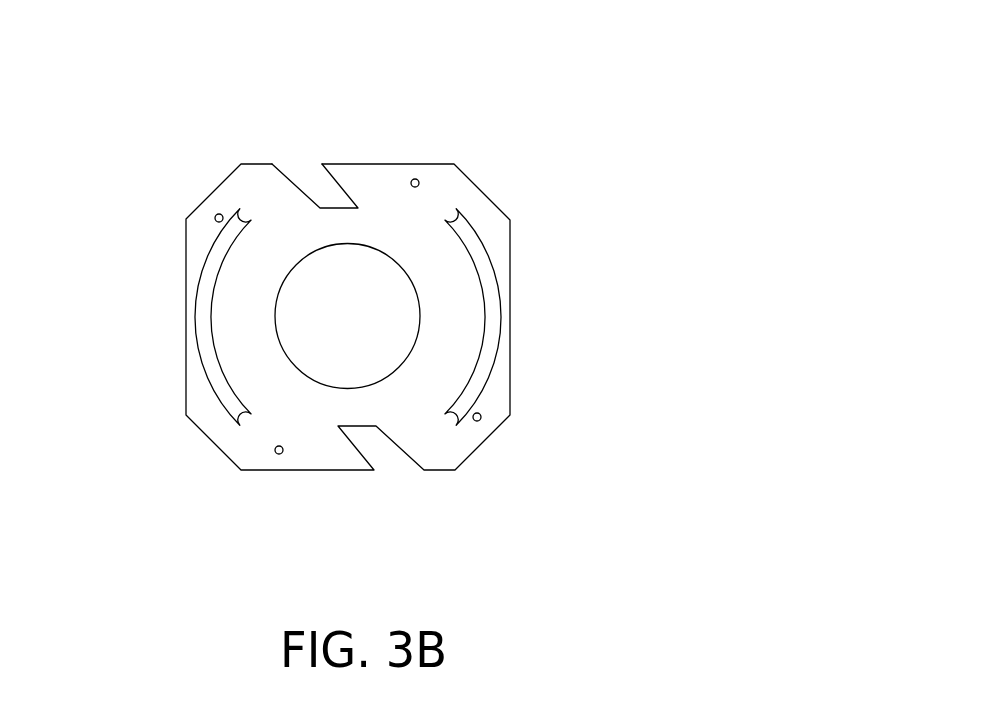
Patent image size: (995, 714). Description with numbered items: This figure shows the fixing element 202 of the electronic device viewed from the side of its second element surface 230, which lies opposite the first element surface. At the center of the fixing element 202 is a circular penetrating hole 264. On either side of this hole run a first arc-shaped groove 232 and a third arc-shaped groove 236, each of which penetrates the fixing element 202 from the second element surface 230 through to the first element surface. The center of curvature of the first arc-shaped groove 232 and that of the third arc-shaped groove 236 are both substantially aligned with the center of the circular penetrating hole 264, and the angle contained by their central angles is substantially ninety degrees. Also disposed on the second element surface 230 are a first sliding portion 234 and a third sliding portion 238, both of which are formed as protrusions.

The fixing element 202 is at (752, 42).
The second element surface 230 is at (356, 164).
The first arc-shaped groove 232 is at (182, 326).
The first sliding portion 234 is at (219, 213).
The third arc-shaped groove 236 is at (514, 327).
The third sliding portion 238 is at (415, 179).
The circular penetrating hole 264 is at (392, 279).